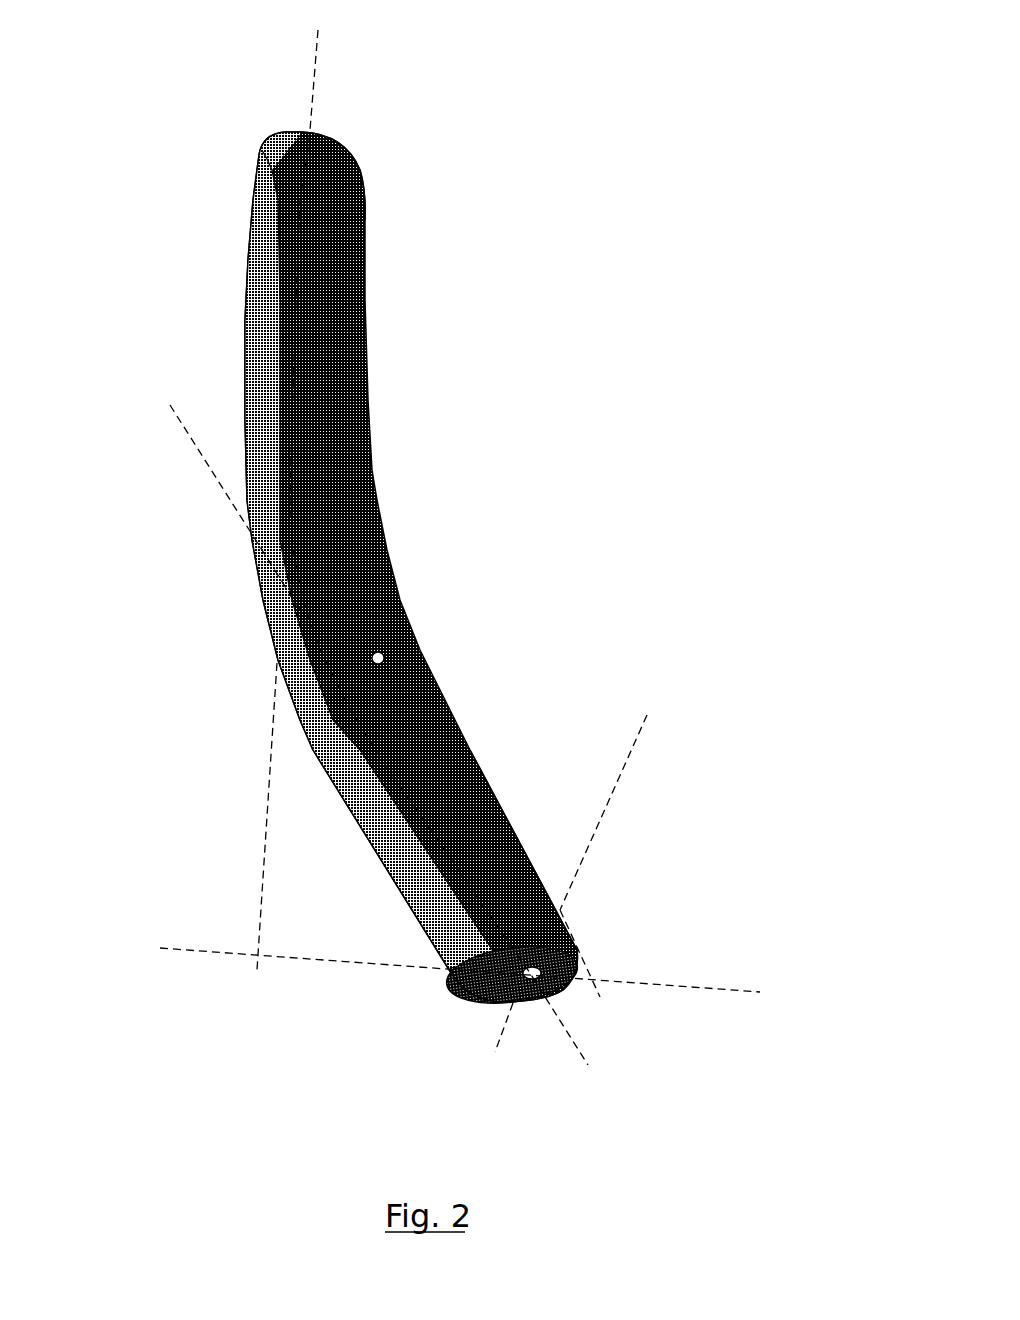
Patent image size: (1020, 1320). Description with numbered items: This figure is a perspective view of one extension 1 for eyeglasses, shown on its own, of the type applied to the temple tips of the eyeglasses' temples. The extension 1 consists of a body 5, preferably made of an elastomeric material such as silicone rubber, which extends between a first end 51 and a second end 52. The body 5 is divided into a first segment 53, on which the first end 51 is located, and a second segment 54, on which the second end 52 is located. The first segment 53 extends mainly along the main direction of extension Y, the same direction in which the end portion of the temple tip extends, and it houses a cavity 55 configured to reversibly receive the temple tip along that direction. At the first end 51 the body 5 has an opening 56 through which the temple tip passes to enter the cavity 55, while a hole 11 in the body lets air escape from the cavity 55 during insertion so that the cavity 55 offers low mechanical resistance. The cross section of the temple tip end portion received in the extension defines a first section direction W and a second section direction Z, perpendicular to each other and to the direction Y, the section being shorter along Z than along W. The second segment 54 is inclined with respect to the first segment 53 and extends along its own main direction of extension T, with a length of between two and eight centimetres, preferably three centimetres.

The extension 1 is at (620, 330).
The body 5 is at (262, 603).
The hole 11 is at (385, 657).
The first end 51 is at (485, 1002).
The second end 52 is at (273, 143).
The first segment 53 is at (378, 832).
The second segment 54 is at (247, 357).
The cavity 55 is at (518, 1002).
The opening 56 is at (573, 957).
The main direction of extension T is at (312, 70).
The main direction of extension Y is at (207, 470).
The second section direction Z is at (630, 750).
The first section direction W is at (740, 985).